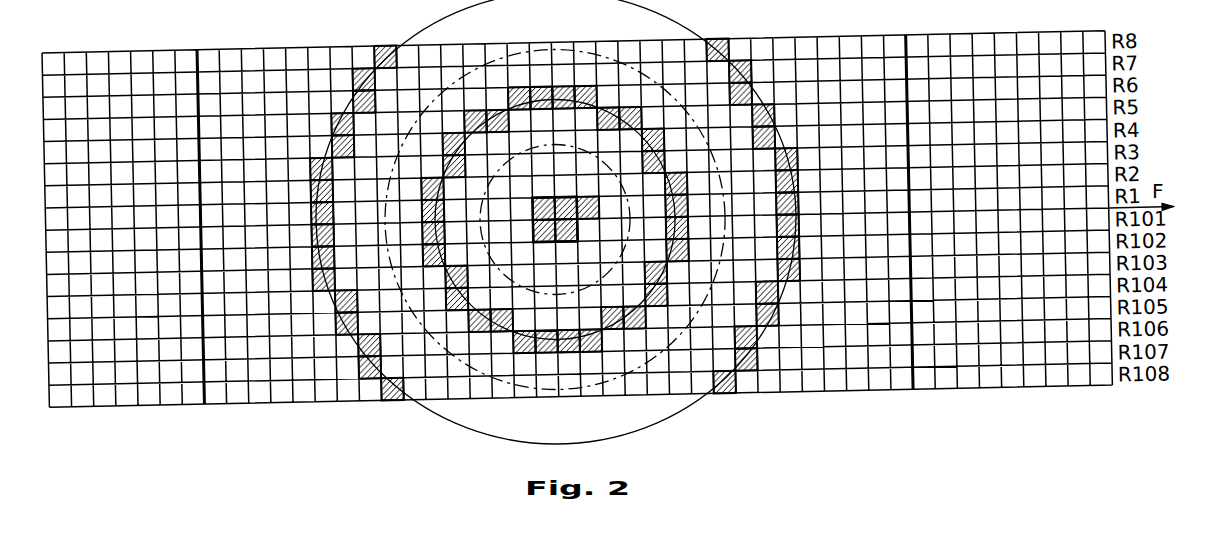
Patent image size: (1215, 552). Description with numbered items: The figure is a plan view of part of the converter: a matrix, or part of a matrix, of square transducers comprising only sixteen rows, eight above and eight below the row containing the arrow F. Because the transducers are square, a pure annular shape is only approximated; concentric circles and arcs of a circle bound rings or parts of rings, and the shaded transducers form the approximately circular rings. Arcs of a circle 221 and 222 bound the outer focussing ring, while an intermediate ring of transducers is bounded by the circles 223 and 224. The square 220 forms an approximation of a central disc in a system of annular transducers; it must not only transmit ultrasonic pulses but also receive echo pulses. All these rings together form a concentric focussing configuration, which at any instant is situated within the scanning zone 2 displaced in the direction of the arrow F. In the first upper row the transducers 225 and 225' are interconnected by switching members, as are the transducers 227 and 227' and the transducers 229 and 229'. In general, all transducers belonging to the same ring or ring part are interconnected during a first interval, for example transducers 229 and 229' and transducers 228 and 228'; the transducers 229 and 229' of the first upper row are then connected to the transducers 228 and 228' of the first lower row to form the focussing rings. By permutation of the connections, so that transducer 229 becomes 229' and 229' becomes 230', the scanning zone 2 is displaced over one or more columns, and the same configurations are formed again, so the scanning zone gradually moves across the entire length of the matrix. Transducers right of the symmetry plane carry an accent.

The scanning zone 2 is at (908, 68).
The square 220 is at (547, 197).
The arc of a circle 221 is at (400, 80).
The arc of a circle 222 is at (340, 92).
The circle 223 is at (433, 167).
The circle 224 is at (483, 298).
The transducer 225 is at (293, 224).
The transducer 225' is at (824, 214).
The transducer 227 is at (402, 222).
The transducer 227' is at (721, 216).
The transducer 228 is at (525, 238).
The transducer 228' is at (591, 238).
The transducer 229 is at (525, 198).
The transducer 229' is at (602, 186).
The transducer 230' is at (614, 198).